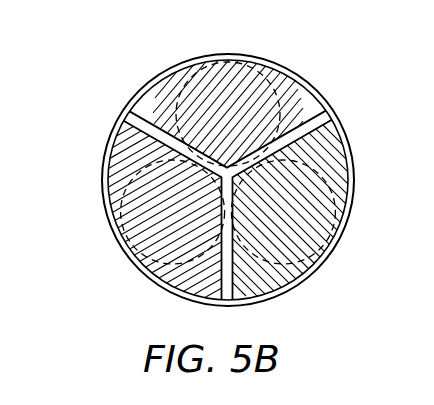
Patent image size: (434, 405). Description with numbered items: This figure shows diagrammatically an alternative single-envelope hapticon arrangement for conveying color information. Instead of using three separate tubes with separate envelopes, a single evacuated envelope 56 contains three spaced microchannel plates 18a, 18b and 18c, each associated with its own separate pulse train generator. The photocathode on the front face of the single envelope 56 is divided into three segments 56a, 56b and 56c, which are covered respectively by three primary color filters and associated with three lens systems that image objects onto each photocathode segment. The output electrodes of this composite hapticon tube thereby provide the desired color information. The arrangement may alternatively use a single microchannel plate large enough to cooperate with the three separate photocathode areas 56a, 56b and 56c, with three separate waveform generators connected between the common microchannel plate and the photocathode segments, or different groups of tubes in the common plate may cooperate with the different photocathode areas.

The evacuated envelope 56 is at (302, 74).
The photocathode segment 56a is at (306, 102).
The photocathode segment 56b is at (327, 152).
The photocathode segment 56c is at (112, 162).
The microchannel plate 18a is at (206, 60).
The microchannel plate 18b is at (342, 180).
The microchannel plate 18c is at (158, 270).